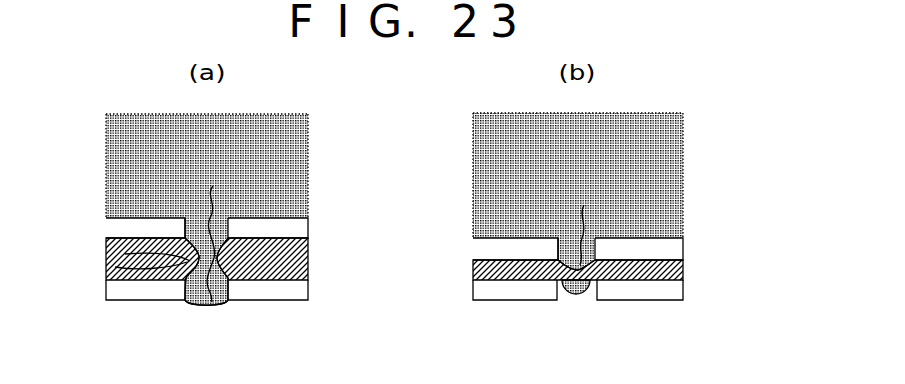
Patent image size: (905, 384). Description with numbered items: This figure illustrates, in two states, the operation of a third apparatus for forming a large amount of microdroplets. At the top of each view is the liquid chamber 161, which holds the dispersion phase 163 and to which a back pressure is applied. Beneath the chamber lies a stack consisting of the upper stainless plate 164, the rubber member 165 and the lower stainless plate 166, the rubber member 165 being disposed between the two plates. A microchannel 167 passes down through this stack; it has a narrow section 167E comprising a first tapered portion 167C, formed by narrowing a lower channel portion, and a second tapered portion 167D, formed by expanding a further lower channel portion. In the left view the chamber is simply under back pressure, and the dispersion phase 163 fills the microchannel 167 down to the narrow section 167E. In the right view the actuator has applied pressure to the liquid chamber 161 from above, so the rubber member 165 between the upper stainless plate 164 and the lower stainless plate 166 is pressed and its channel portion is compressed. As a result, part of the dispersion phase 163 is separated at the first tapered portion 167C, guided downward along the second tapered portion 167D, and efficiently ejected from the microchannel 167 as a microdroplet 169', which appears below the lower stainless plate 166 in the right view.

The liquid chamber 161 is at (309, 132).
The dispersion phase 163 is at (310, 179).
The upper stainless plate 164 is at (308, 226).
The rubber member 165 is at (310, 263).
The lower stainless plate 166 is at (306, 296).
The microchannels 167 is at (392, 234).
The first tapered portion 167C is at (125, 254).
The second tapered portion 167D is at (115, 267).
The narrow section 167E is at (210, 302).
The microdroplet 169' is at (602, 317).